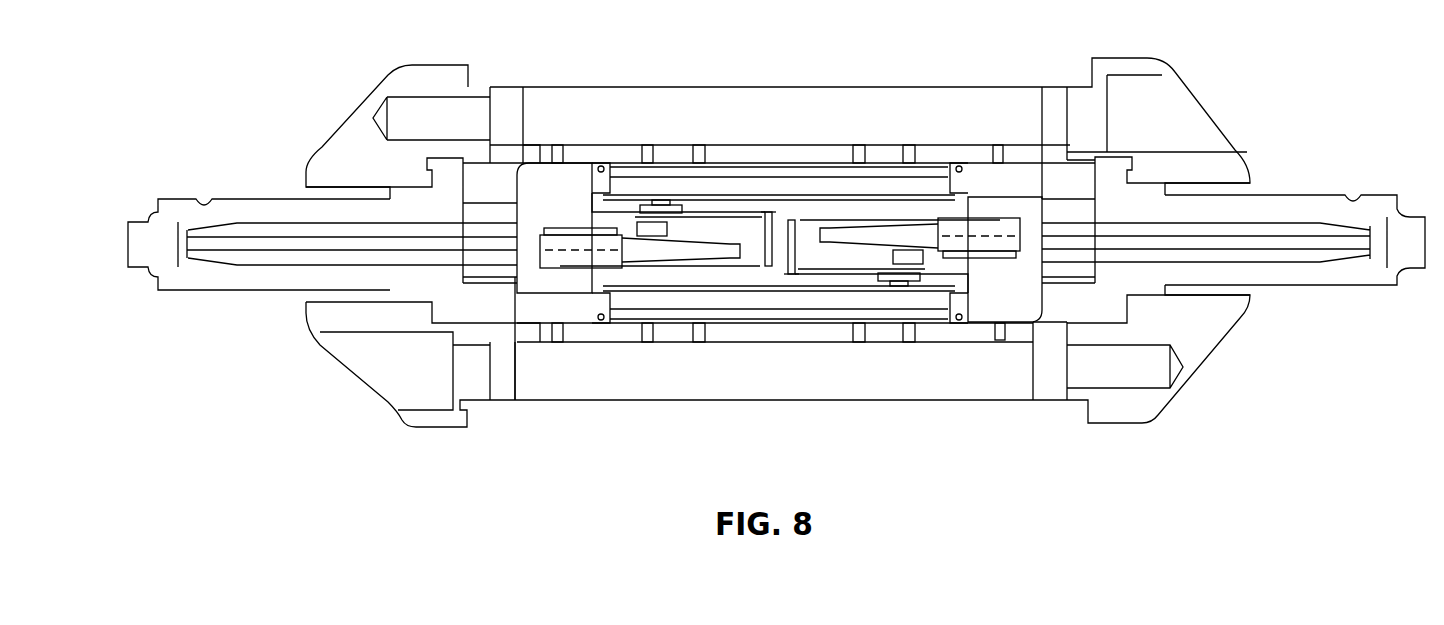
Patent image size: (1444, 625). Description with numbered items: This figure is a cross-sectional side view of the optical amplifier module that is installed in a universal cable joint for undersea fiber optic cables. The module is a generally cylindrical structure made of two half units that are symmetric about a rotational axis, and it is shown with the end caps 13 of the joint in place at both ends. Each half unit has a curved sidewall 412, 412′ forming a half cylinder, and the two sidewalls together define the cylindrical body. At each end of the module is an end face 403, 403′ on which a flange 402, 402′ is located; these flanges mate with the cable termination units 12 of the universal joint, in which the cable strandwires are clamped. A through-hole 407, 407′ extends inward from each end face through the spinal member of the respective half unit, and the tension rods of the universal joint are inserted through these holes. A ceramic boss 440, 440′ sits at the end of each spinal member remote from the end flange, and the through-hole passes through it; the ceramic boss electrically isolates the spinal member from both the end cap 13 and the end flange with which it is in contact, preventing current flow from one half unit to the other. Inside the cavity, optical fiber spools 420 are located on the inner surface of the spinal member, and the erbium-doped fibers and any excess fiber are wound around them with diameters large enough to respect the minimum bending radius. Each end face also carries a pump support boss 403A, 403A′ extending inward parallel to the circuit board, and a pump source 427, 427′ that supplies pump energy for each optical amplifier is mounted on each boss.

The cable termination unit 12 is at (236, 205).
The end cap 13 is at (337, 320).
The flange 402 is at (507, 213).
The flange 402′ is at (1053, 263).
The end face 403 is at (503, 388).
The end face 403′ is at (1053, 95).
The pump support boss 403A is at (547, 293).
The pump support boss 403A′ is at (995, 193).
The through-hole 407 is at (407, 107).
The through-hole 407′ is at (738, 100).
The curved sidewall 412 is at (533, 335).
The curved sidewall 412′ is at (540, 153).
The optical fiber spool 420 is at (787, 193).
The pump source 427 is at (583, 232).
The pump source 427′ is at (980, 257).
The ceramic boss 440 is at (1050, 387).
The ceramic boss 440′ is at (510, 100).